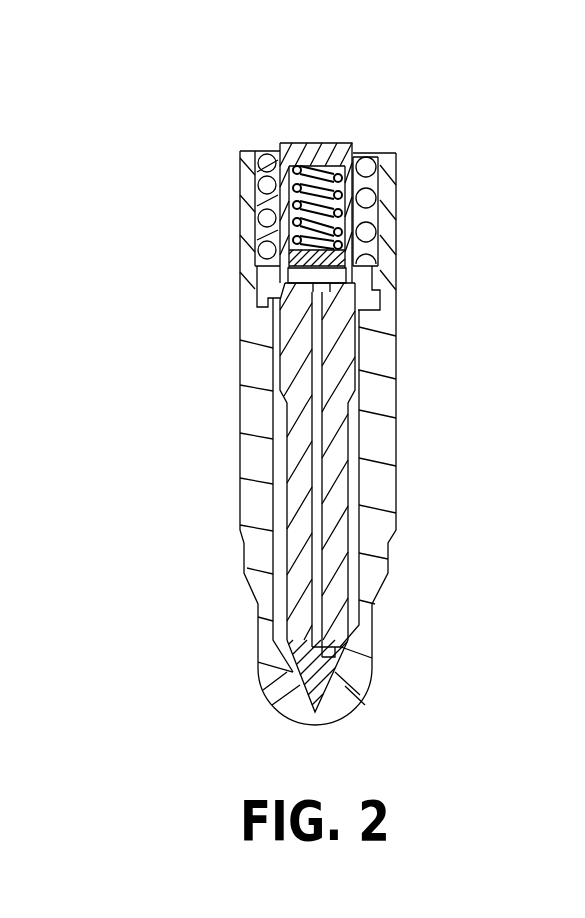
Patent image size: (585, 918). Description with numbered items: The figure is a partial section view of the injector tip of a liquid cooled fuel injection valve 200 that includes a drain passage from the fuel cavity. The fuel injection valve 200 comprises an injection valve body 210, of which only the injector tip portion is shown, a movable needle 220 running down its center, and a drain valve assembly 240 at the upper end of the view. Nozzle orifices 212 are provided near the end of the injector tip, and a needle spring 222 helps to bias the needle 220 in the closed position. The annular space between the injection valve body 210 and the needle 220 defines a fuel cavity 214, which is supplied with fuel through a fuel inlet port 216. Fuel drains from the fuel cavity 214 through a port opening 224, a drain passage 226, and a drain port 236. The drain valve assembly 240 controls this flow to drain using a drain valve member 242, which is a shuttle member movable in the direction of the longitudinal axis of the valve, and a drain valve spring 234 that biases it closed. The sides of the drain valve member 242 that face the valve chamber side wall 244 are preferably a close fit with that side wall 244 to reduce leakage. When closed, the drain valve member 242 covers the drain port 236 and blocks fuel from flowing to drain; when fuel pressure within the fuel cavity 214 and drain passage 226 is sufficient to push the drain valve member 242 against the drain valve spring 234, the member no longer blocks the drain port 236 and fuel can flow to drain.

The fuel injection valve 200 is at (202, 117).
The injection valve body 210 is at (258, 362).
The nozzle orifices 212 is at (275, 685).
The fuel cavity 214 is at (280, 560).
The fuel inlet port 216 is at (380, 400).
The movable needle 220 is at (296, 474).
The needle spring 222 is at (262, 245).
The port opening 224 is at (345, 632).
The drain passage 226 is at (317, 510).
The drain valve spring 234 is at (355, 197).
The drain port 236 is at (355, 253).
The drain valve assembly 240 is at (408, 133).
The drain valve member 242 is at (363, 241).
The valve chamber side wall 244 is at (355, 220).